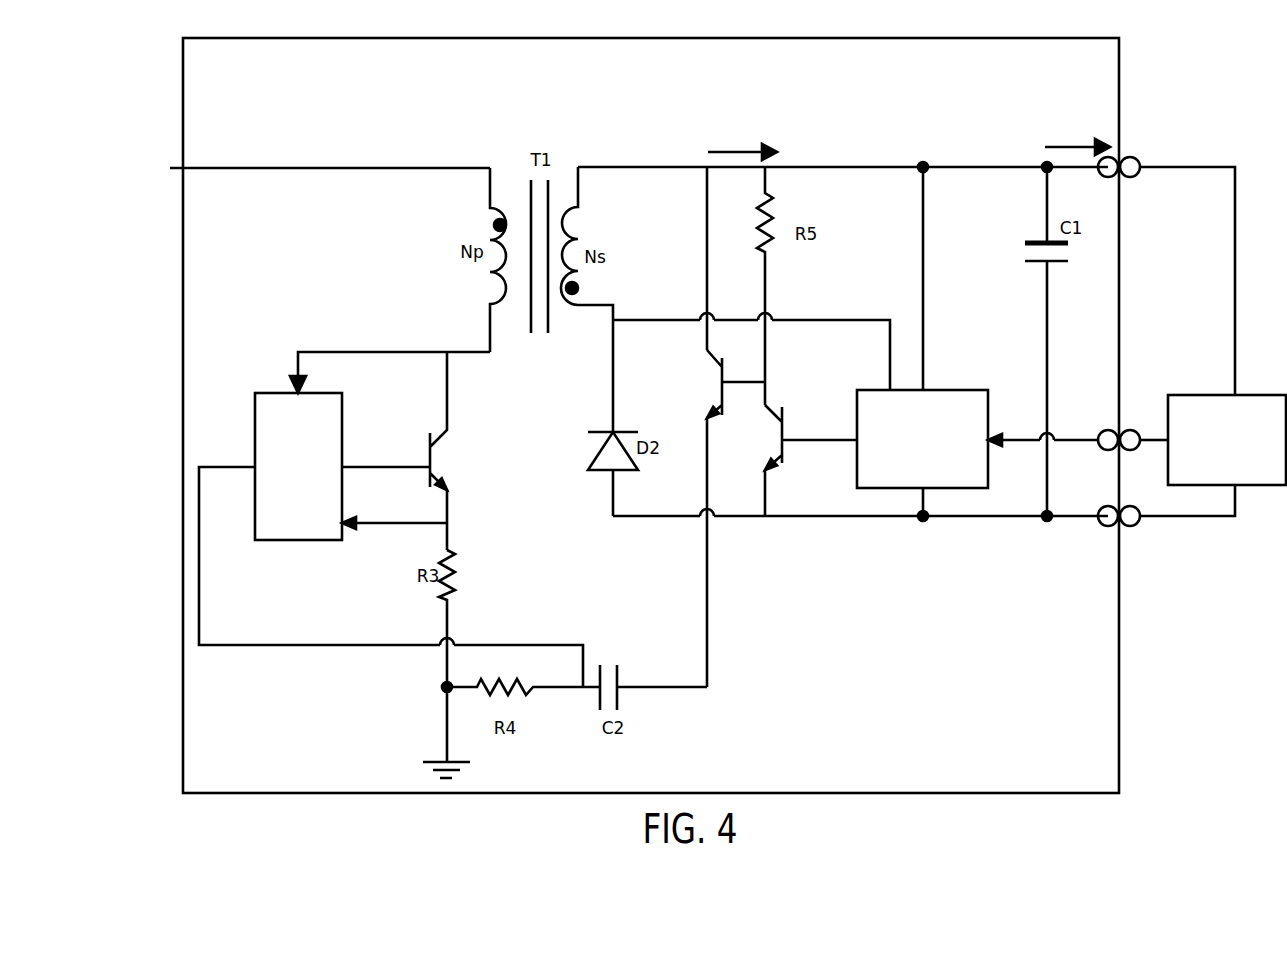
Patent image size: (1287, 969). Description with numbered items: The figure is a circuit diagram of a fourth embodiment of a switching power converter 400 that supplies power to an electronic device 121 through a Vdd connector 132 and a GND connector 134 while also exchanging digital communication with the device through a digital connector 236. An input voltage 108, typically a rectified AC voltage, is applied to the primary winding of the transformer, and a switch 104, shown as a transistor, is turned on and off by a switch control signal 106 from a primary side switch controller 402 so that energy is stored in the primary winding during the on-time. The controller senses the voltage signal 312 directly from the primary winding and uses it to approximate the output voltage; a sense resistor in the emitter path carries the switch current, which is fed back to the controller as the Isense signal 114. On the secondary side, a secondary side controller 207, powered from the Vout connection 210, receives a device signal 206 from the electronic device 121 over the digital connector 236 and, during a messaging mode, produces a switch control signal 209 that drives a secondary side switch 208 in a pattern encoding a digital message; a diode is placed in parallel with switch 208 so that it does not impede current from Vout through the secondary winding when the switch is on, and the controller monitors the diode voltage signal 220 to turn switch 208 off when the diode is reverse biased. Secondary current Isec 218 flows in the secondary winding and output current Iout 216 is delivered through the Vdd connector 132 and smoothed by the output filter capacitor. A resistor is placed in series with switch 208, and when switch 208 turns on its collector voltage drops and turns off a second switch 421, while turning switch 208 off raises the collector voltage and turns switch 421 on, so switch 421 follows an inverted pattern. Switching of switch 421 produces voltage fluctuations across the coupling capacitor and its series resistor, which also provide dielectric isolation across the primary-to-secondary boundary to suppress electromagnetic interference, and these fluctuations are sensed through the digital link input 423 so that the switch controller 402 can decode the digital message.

The switching power converter 400 is at (651, 415).
The input voltage 108 is at (166, 168).
The voltage signal VSENSE 312 is at (367, 350).
The digital link input 423 is at (210, 465).
The switch controller 402 is at (298, 466).
The switch control signal 106 is at (370, 466).
The switch 104 is at (427, 440).
The Isense signal line 114 is at (386, 524).
The Vout connection 210 is at (896, 247).
The secondary current ISEC 218 is at (742, 127).
The diode voltage signal 220 is at (804, 317).
The switch 421 is at (725, 372).
The secondary side switch 208 is at (782, 422).
The switch control signal 209 is at (824, 440).
The secondary side controller 207 is at (922, 439).
The output current Iout 216 is at (1077, 120).
The Vdd connector 132 is at (1135, 158).
The device signal 206 is at (1058, 437).
The digital connector 236 is at (1133, 430).
The electronic device 121 is at (1227, 440).
The GND connector 134 is at (1138, 526).